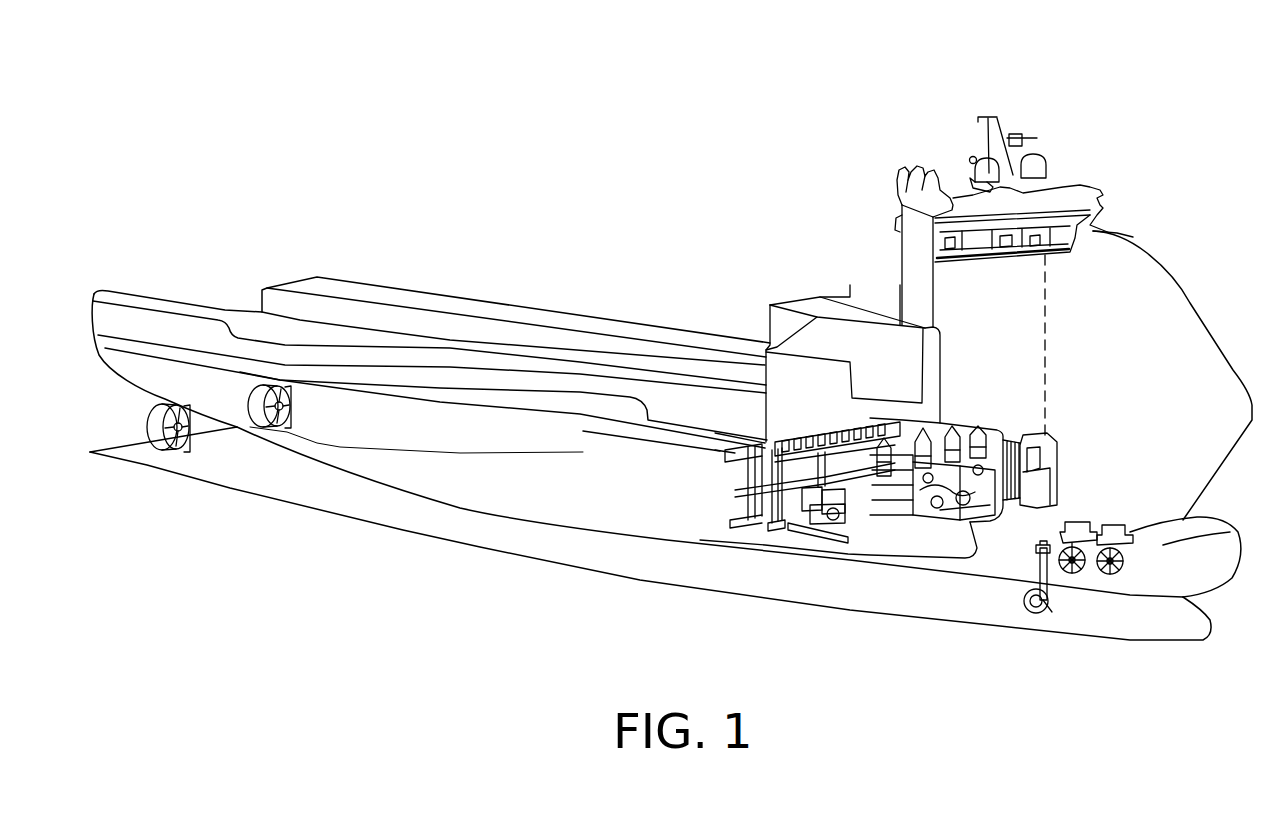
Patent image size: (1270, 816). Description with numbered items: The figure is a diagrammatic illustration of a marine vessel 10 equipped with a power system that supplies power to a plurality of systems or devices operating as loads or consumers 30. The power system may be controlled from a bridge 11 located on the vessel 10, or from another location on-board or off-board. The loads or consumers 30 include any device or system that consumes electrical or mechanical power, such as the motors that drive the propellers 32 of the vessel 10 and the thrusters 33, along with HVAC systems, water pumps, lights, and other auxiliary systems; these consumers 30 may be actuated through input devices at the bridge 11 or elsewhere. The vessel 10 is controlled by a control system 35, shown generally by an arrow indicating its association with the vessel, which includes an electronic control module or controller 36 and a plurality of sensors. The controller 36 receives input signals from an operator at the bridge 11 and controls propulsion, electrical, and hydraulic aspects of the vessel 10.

The marine vessel 10 is at (603, 178).
The bridge 11 is at (1080, 151).
The loads or consumers 30 is at (197, 508).
The propellers 32 is at (147, 423).
The thrusters 33 is at (1110, 577).
The control system 35 is at (1111, 305).
The controller 36 is at (1150, 348).